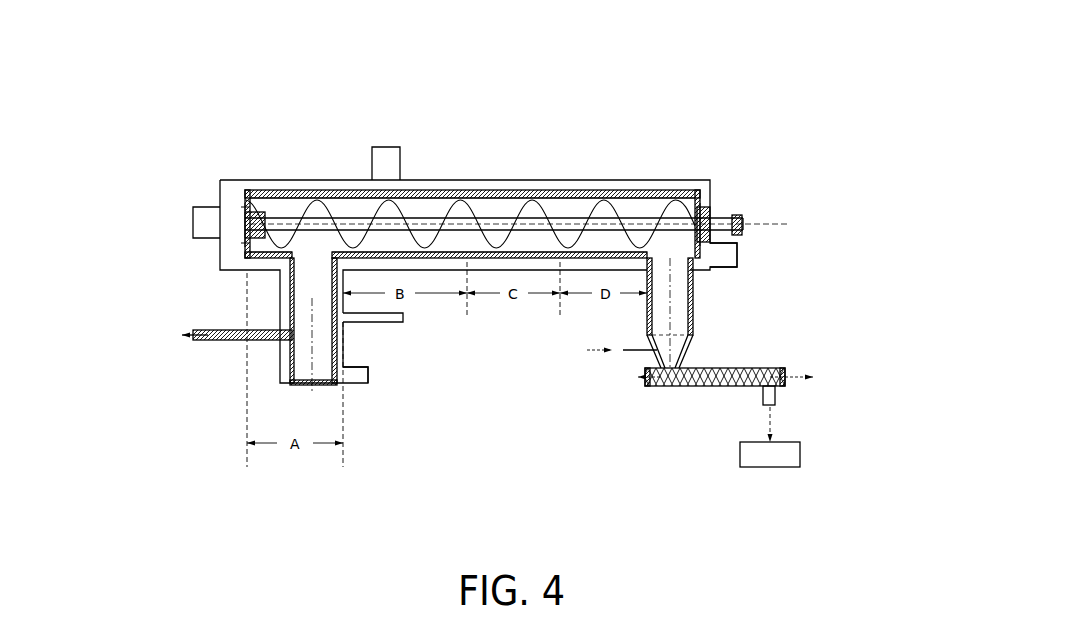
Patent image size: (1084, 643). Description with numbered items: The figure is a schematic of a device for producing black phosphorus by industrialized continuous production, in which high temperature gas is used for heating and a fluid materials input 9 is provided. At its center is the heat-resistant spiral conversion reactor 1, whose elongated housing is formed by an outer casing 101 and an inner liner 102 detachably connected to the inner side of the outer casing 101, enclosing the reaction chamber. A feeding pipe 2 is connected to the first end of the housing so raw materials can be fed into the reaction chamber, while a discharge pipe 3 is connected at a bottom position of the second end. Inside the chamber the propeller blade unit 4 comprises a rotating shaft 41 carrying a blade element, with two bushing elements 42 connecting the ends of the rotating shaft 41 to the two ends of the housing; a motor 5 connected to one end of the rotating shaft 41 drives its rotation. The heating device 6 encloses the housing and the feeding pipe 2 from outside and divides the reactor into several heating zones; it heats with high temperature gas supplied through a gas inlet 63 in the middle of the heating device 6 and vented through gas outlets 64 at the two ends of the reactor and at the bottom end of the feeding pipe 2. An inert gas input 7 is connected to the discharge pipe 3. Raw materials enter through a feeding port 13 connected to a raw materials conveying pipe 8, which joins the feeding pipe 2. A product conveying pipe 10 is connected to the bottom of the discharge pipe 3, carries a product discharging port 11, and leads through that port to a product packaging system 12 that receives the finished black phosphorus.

The heat-resistant spiral conversion reactor 1 is at (407, 190).
The outer casing 101 is at (313, 190).
The inner liner 102 is at (352, 190).
The feeding pipe 2 is at (308, 368).
The discharge pipe 3 is at (700, 297).
The propeller blade unit 4 is at (475, 198).
The rotating shaft 41 is at (575, 218).
The bushing 42 is at (253, 217).
The motor 5 is at (750, 218).
The heating device 6 is at (702, 178).
The gas inlet 63 is at (387, 145).
The gas outlet 64 is at (193, 222).
The inert gas input 7 is at (630, 350).
The raw materials conveying pipe 8 is at (232, 338).
The fluid materials input 9 is at (367, 313).
The product conveying pipe 10 is at (757, 367).
The product discharging port 11 is at (777, 397).
The product packaging system 12 is at (770, 453).
The feeding port 13 is at (203, 327).